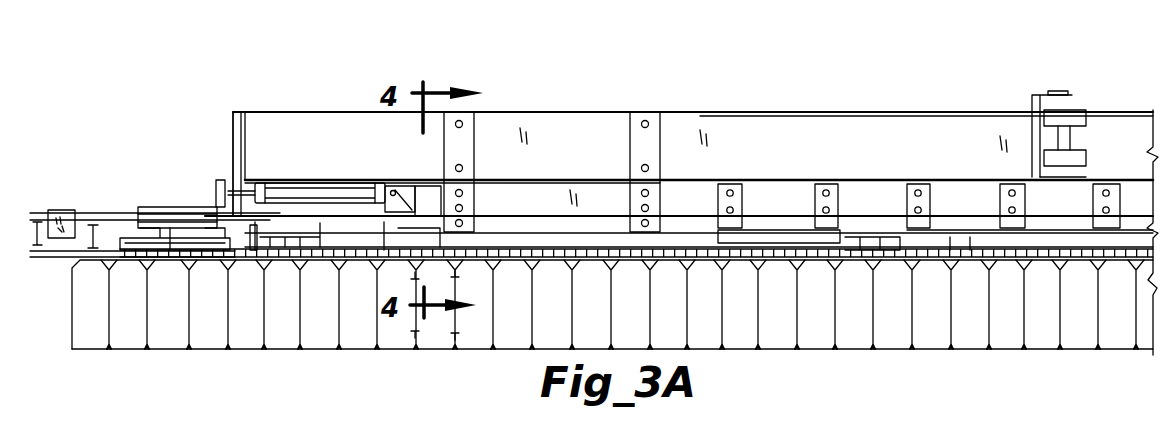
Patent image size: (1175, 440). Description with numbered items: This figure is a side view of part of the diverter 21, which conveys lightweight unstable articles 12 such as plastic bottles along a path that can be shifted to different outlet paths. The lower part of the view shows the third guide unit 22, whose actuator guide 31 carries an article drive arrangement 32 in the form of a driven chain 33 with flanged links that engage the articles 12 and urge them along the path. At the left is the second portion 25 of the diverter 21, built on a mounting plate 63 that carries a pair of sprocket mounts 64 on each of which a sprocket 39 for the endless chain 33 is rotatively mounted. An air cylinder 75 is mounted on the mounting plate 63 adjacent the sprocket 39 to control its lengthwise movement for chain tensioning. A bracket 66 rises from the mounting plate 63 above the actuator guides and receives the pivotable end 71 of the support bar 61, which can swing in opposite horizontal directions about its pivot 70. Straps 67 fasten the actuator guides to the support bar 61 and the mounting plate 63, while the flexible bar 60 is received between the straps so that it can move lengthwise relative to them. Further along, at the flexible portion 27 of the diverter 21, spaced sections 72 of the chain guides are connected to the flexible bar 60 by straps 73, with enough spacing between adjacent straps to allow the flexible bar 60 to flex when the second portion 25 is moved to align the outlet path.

The articles 12 is at (972, 338).
The diverter 21 is at (337, 113).
The third guide unit 22 is at (843, 100).
The second portion 25 is at (137, 208).
The flexible portion 27 is at (968, 195).
The actuator guide 31 is at (208, 248).
The article drive arrangement 32 is at (152, 247).
The driven chain 33 is at (167, 250).
The sprocket 39 is at (192, 248).
The flexible bar 60 is at (592, 198).
The support bar 61 is at (540, 125).
The mounting plate 63 is at (100, 212).
The sprocket mount 64 is at (202, 228).
The bracket 66 is at (230, 133).
The straps 67 is at (655, 152).
The pivot 70 is at (1098, 68).
The pivotable end 71 is at (283, 115).
The spaced sections 72 is at (842, 224).
The straps 73 is at (832, 200).
The air cylinders 75 is at (348, 190).